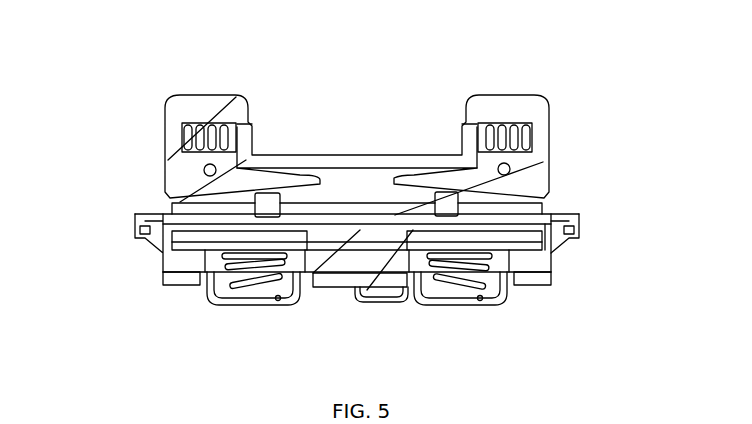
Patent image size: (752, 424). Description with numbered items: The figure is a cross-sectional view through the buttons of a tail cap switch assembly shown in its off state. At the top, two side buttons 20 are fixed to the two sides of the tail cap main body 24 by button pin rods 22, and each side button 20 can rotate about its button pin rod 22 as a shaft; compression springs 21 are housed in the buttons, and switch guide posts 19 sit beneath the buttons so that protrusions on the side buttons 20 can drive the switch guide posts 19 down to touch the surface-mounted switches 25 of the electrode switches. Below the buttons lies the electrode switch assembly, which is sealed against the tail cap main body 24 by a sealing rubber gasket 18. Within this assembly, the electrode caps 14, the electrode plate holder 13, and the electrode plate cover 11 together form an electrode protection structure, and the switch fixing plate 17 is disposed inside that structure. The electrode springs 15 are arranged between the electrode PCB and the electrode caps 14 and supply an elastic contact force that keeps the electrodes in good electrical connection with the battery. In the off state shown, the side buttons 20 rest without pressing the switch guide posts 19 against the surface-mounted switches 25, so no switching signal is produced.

The electrode plate cover 11 is at (530, 288).
The electrode plate holder 13 is at (557, 275).
The electrode caps 14 is at (212, 297).
The electrode springs 15 is at (220, 268).
The switch fixing plate 17 is at (160, 252).
The sealing rubber gasket 18 is at (558, 245).
The switch guide posts 19 is at (447, 218).
The side buttons 20 is at (480, 120).
The compression springs 21 is at (542, 107).
The button pin rods 22 is at (509, 173).
The tail cap main body 24 is at (577, 230).
The surface-mounted switches 25 is at (230, 224).